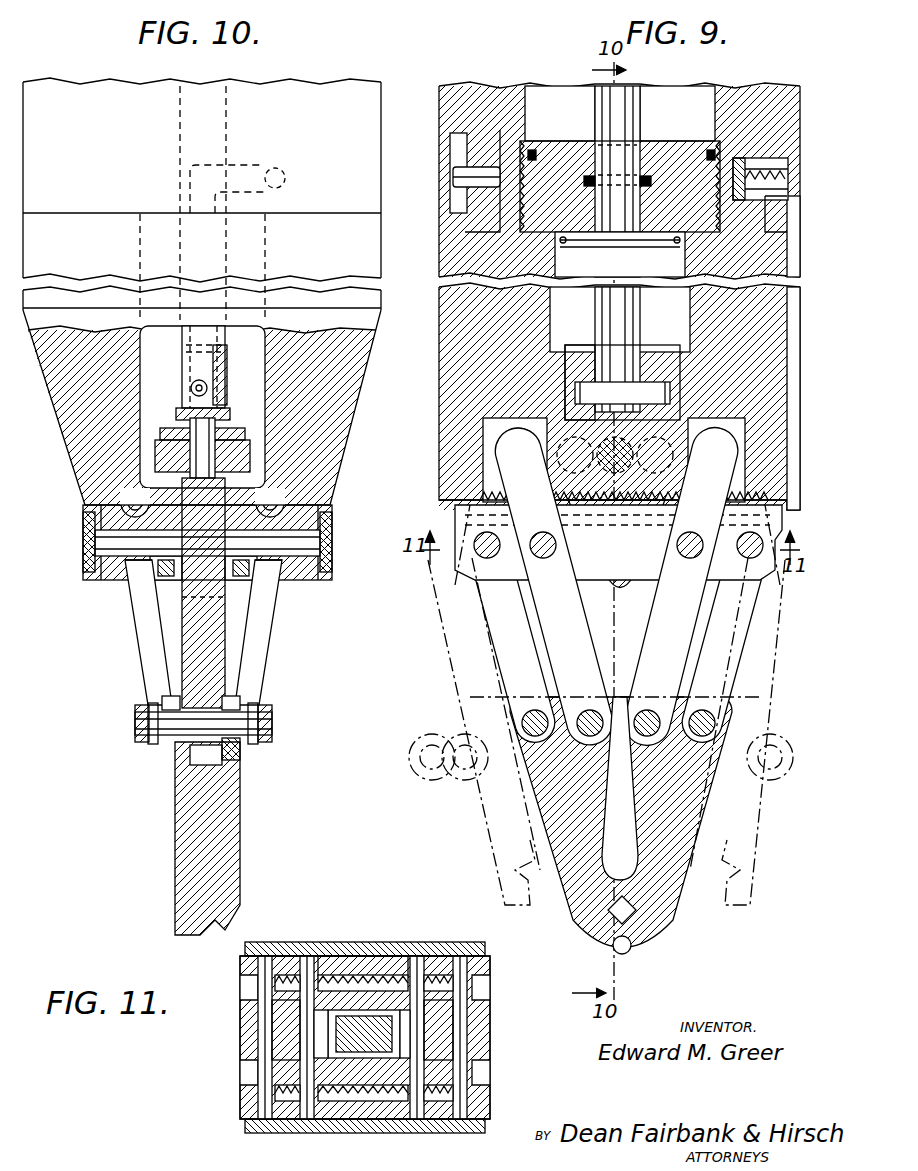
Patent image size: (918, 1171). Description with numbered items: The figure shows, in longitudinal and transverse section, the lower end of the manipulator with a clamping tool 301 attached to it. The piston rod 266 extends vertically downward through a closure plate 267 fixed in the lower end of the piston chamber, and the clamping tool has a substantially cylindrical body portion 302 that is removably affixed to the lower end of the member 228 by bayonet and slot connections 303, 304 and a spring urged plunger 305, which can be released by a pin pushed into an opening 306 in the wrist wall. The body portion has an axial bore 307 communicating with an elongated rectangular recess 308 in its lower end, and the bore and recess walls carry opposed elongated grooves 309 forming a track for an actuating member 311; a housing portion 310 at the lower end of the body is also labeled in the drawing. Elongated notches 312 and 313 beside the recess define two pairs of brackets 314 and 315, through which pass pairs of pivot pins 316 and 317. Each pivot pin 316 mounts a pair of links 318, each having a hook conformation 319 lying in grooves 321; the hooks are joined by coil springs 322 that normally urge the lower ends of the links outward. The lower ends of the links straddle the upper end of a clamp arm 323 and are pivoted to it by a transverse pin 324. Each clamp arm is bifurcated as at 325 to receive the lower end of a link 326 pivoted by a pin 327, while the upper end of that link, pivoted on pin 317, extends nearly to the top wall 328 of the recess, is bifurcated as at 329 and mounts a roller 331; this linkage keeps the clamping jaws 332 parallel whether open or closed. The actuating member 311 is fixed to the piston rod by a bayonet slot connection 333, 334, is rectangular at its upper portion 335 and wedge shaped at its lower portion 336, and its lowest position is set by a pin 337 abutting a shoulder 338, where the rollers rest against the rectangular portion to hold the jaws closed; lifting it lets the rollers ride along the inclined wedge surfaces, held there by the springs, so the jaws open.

In FIG. 9, the member 228 is at (441, 92).
In FIG. 9, the piston rod 266 is at (597, 108).
In FIG. 9, the closure plate 267 is at (685, 155).
In FIG. 9, the clamping tool 301 is at (430, 441).
In FIG. 9, the body portion 302 is at (452, 320).
In FIG. 9, the bayonet connection 303 is at (480, 165).
In FIG. 10, the slot connection 304 is at (244, 166).
In FIG. 9, the spring urged plunger 305 is at (752, 158).
In FIG. 9, the opening 306 is at (722, 238).
In FIG. 10, the axial bore 307 is at (245, 386).
In FIG. 9, the axial bore 307 is at (690, 318).
In FIG. 10, the elongated rectangular recess 308 is at (240, 490).
In FIG. 9, the elongated rectangular recess 308 is at (738, 430).
In FIG. 9, the elongated grooves 309 is at (555, 258).
In FIG. 10, the housing 310 is at (103, 580).
In FIG. 10, the actuating member 311 is at (218, 352).
In FIG. 9, the actuating member 311 is at (700, 385).
In FIG. 11, the actuating member 311 is at (400, 1030).
In FIG. 10, the elongated notch 312 is at (128, 600).
In FIG. 11, the elongated notch 312 is at (240, 980).
In FIG. 10, the elongated notch 313 is at (280, 598).
In FIG. 11, the elongated notch 313 is at (240, 1084).
In FIG. 9, the pair of brackets 314 is at (700, 572).
In FIG. 11, the pair of brackets 314 is at (355, 975).
In FIG. 10, the pair of brackets 315 is at (305, 580).
In FIG. 11, the pair of brackets 315 is at (358, 1101).
In FIG. 9, the pivot pin 316 is at (476, 550).
In FIG. 11, the pivot pin 316 is at (265, 956).
In FIG. 10, the pivot pin 317 is at (130, 542).
In FIG. 9, the pivot pin 317 is at (532, 550).
In FIG. 11, the pivot pin 317 is at (308, 956).
In FIG. 10, the links 318 is at (142, 650).
In FIG. 9, the links 318 is at (490, 635).
In FIG. 11, the links 318 is at (245, 990).
In FIG. 9, the hook conformation 319 is at (765, 492).
In FIG. 10, the grooves 321 is at (125, 495).
In FIG. 10, the coil springs 322 is at (124, 506).
In FIG. 9, the coil springs 322 is at (620, 570).
In FIG. 11, the coil springs 322 is at (395, 956).
In FIG. 10, the clamp arm 323 is at (184, 820).
In FIG. 9, the clamp arm 323 is at (548, 832).
In FIG. 10, the transverse pin 324 is at (275, 727).
In FIG. 9, the transverse pin 324 is at (524, 728).
In FIG. 10, the bifurcated portion 325 is at (195, 756).
In FIG. 9, the bifurcated portion 325 is at (590, 740).
In FIG. 10, the link 326 is at (196, 657).
In FIG. 9, the link 326 is at (662, 641).
In FIG. 11, the link 326 is at (286, 1040).
In FIG. 10, the pin 327 is at (232, 752).
In FIG. 9, the pin 327 is at (640, 715).
In FIG. 10, the top wall 328 is at (178, 416).
In FIG. 9, the top wall 328 is at (500, 425).
In FIG. 10, the bifurcated upper end 329 is at (232, 433).
In FIG. 10, the roller 331 is at (200, 445).
In FIG. 9, the clamping jaws 332 is at (620, 946).
In FIG. 9, the bayonet slot connection 333 is at (572, 380).
In FIG. 9, the bayonet slot connection 334 is at (580, 345).
In FIG. 9, the rectangular portion 335 is at (582, 400).
In FIG. 9, the wedge shaped portion 336 is at (665, 560).
In FIG. 10, the pin 337 is at (165, 455).
In FIG. 10, the shoulder 338 is at (100, 540).